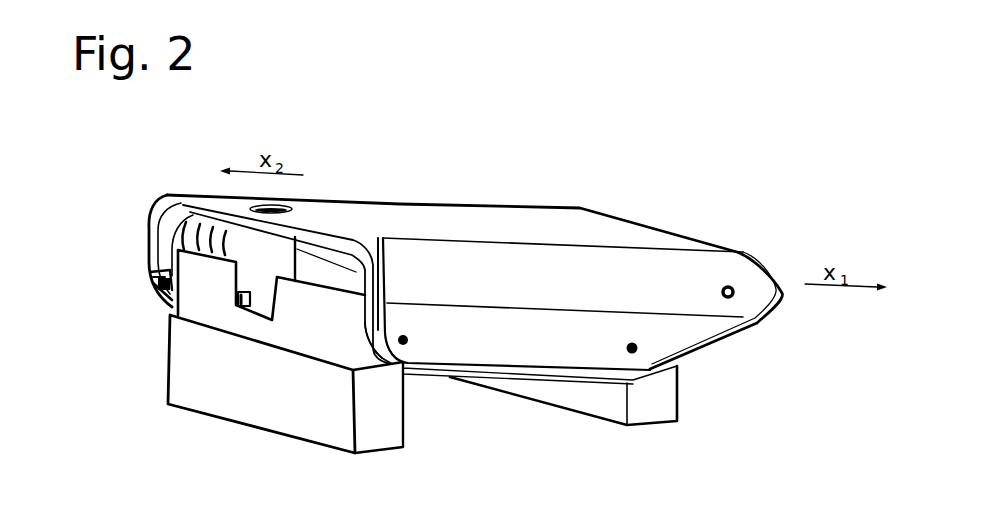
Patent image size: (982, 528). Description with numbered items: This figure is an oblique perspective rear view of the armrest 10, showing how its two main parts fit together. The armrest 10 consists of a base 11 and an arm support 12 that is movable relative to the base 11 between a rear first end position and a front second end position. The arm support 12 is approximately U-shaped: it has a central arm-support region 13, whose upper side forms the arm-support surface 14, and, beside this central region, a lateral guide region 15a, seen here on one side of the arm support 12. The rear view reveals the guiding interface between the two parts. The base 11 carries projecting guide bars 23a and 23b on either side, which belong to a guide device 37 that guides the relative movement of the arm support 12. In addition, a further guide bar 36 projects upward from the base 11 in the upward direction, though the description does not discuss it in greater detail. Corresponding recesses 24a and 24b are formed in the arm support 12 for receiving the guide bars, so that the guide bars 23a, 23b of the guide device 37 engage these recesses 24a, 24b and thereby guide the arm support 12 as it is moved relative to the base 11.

The armrest 10 is at (772, 141).
The base 11 is at (657, 400).
The arm support 12 is at (623, 233).
The central arm-support region 13 is at (423, 219).
The arm-support surface 14 is at (533, 223).
The lateral guide region 15a is at (577, 344).
The guide bar 23a is at (350, 346).
The guide bar 23b is at (152, 290).
The recess 24a is at (406, 368).
The recess 24b is at (138, 276).
The guide bar 36 is at (185, 284).
The guide device 37 is at (234, 320).